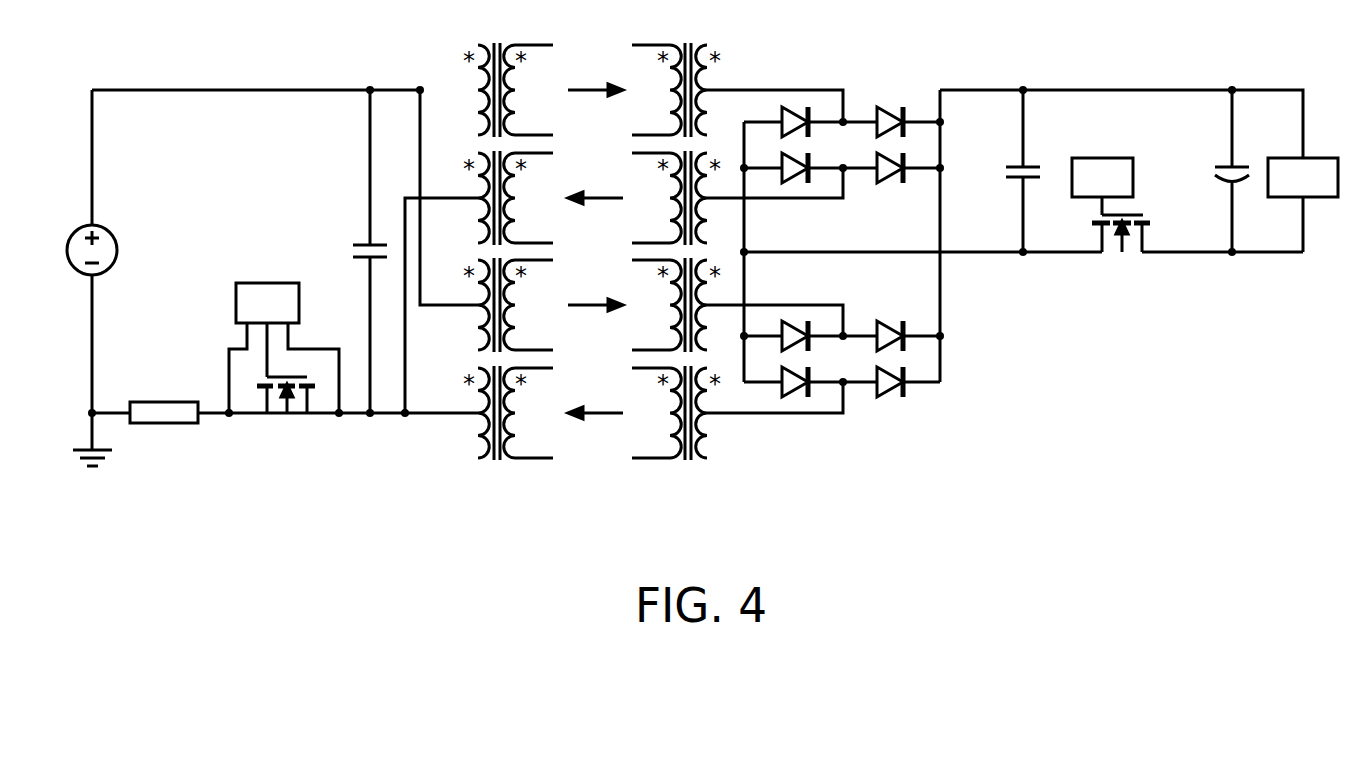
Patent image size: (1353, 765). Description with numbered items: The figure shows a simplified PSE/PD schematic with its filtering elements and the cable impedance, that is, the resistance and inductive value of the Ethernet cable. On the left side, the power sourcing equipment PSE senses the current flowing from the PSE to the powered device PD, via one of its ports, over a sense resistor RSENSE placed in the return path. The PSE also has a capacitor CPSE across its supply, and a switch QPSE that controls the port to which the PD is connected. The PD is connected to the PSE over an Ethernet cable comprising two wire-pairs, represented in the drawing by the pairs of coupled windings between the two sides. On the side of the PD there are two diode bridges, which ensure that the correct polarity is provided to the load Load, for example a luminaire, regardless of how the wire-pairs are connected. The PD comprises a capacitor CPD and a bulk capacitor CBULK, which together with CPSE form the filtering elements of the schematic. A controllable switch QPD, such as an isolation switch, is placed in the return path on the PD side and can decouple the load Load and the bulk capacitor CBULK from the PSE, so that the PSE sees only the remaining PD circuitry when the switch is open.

The sense resistor RSENSE is at (168, 431).
The PSE capacitor CPSE is at (346, 251).
The power sourcing equipment PSE is at (267, 303).
The PSE switch QPSE is at (284, 391).
The PD capacitor CPD is at (1007, 171).
The powered device PD is at (1102, 177).
The controllable switch QPD is at (1121, 242).
The bulk capacitor CBULK is at (1205, 171).
The load Load is at (1303, 177).